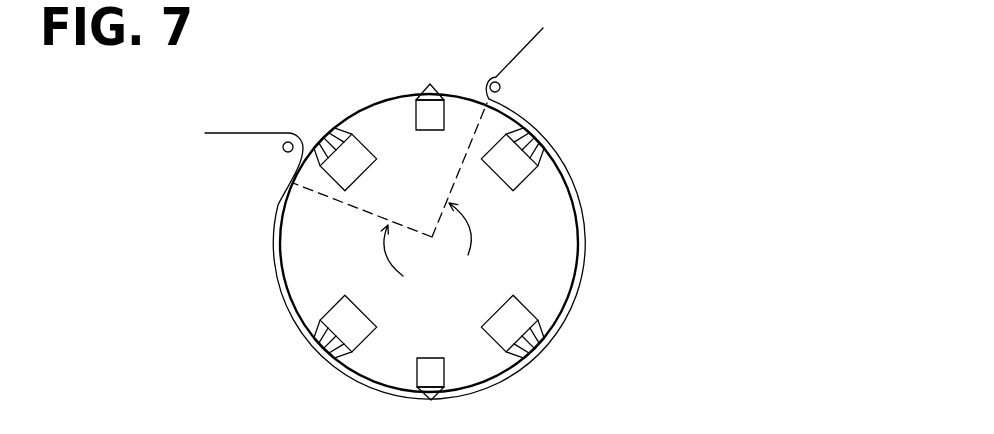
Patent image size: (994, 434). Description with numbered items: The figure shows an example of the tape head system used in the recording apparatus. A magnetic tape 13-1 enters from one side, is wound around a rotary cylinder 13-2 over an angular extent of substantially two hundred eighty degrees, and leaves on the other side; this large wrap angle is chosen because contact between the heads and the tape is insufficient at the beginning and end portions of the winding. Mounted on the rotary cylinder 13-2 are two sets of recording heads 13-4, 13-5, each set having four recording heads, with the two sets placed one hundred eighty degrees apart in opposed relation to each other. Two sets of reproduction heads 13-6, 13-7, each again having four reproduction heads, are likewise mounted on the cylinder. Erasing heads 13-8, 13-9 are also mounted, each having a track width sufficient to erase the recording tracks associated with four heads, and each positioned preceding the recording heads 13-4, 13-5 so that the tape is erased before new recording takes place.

The magnetic tape 13-1 is at (240, 135).
The rotary cylinder 13-2 is at (553, 238).
The recording head 13-4 is at (530, 312).
The recording head 13-5 is at (364, 138).
The reproduction head 13-6 is at (530, 184).
The reproduction head 13-7 is at (325, 307).
The erasing head 13-8 is at (447, 373).
The erasing head 13-9 is at (458, 95).